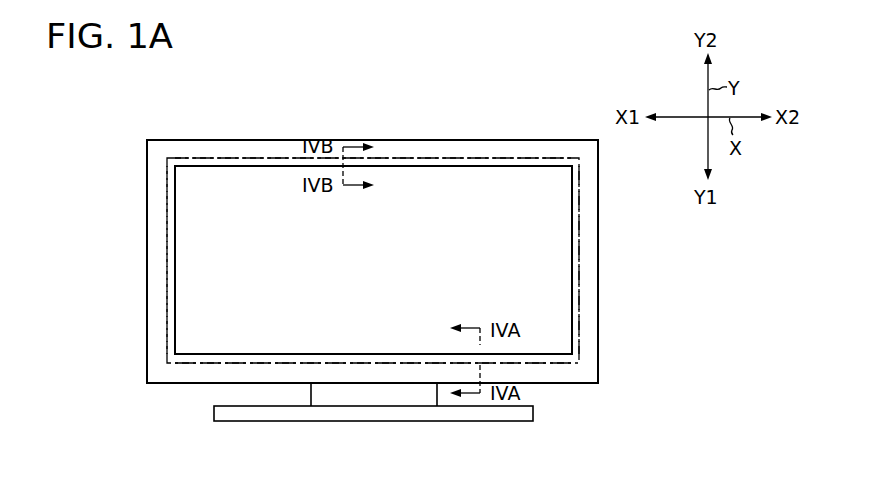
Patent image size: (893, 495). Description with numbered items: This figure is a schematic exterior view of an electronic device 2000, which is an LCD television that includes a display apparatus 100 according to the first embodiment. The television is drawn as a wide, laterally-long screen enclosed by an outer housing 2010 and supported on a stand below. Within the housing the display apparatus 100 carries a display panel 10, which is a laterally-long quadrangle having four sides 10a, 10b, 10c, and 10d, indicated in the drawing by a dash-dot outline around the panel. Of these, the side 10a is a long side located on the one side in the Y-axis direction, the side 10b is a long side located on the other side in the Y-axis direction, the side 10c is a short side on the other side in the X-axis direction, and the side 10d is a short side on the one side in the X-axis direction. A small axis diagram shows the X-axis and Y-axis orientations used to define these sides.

The electronic device 2000 is at (258, 60).
The housing 2010 is at (590, 326).
The display panel 10 is at (586, 234).
The side 10a is at (383, 365).
The side 10b is at (400, 158).
The side 10c is at (167, 256).
The side 10d is at (580, 276).
The display apparatus 100 is at (470, 146).